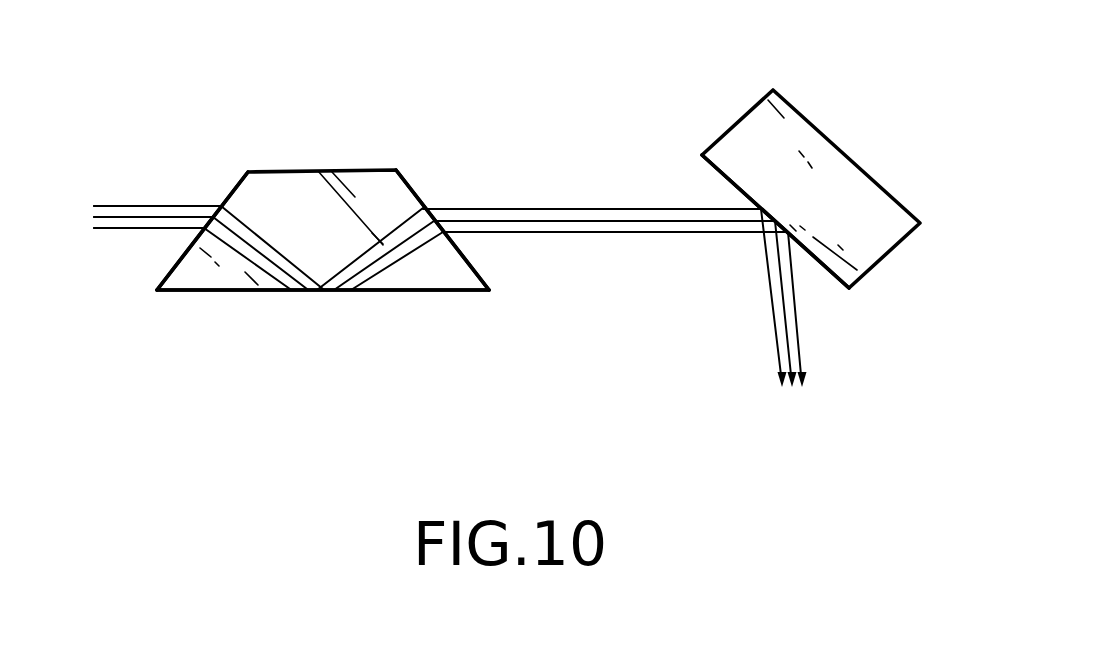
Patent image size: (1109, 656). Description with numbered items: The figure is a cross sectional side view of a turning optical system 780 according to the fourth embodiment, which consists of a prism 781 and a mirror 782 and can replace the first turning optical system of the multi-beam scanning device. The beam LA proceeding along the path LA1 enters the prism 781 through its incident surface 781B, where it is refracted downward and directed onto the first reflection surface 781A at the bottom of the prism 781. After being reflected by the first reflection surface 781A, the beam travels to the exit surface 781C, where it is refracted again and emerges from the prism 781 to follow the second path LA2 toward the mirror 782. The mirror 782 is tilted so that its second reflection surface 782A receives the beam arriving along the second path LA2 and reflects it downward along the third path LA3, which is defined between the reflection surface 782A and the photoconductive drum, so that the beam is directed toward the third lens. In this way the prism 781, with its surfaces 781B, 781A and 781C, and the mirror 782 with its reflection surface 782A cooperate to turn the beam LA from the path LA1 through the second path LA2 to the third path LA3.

The turning optical system 780 is at (821, 193).
The prism 781 is at (377, 215).
The first reflection surface 781A is at (382, 290).
The surface 781B is at (240, 182).
The surface 781C is at (468, 256).
The mirror 782 is at (917, 153).
The second reflection surface 782A is at (822, 264).
The beam LA is at (109, 243).
The path LA1 is at (150, 206).
The second path LA2 is at (405, 208).
The third path LA3 is at (778, 358).